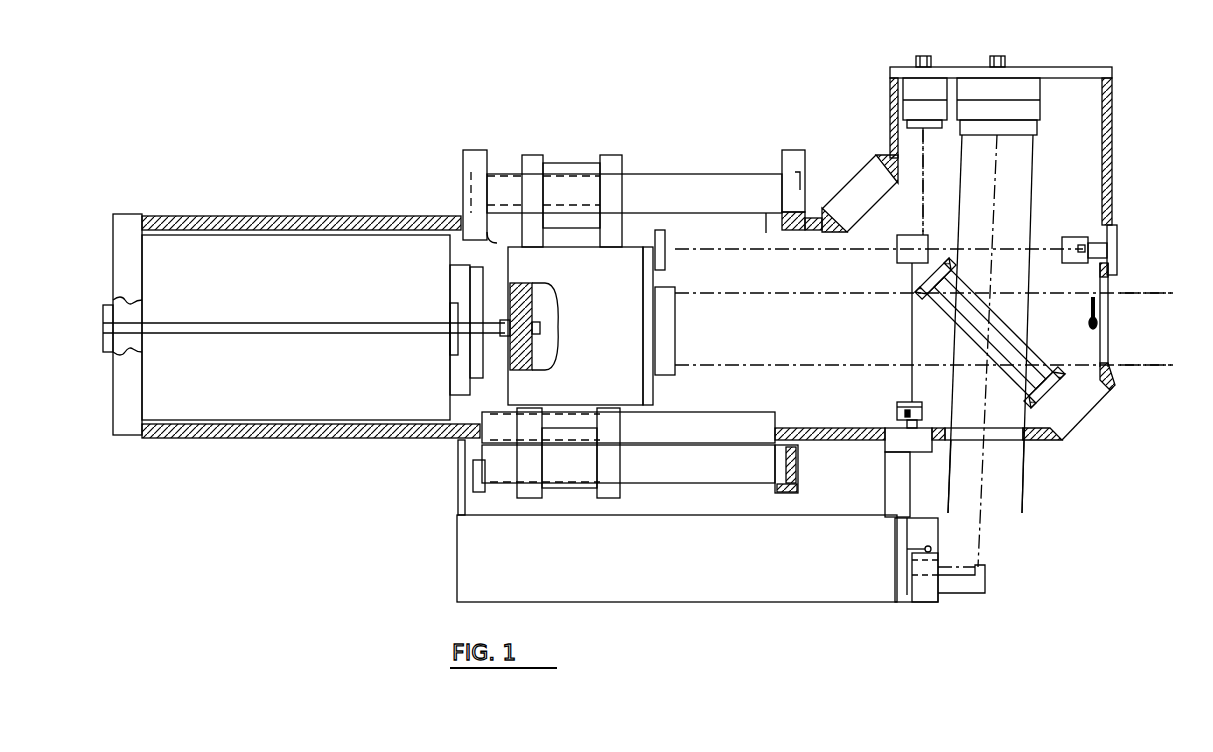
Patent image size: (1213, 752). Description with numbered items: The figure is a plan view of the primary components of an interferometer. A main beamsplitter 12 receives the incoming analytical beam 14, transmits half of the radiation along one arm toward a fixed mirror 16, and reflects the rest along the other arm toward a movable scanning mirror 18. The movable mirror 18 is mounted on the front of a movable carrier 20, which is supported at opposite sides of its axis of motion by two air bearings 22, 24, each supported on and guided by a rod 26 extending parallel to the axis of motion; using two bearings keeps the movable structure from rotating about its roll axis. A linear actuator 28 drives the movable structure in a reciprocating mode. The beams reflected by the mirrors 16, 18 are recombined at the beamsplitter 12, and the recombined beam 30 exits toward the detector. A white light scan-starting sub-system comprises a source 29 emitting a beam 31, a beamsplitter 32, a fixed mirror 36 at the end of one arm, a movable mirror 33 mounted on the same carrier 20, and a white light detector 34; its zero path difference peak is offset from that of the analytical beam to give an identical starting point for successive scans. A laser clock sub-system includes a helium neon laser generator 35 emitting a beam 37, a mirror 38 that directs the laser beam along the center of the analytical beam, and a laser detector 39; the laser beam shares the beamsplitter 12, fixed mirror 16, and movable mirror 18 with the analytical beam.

The main beamsplitter 12 is at (1010, 337).
The analytical beam 14 is at (953, 480).
The fixed mirror 16 is at (1040, 130).
The movable scanning mirror 18 is at (680, 330).
The movable carrier 20 is at (632, 262).
The air bearing 22 is at (563, 165).
The air bearing 24 is at (624, 463).
The rod 26 is at (733, 187).
The linear actuator 28 is at (382, 392).
The white light source 29 is at (905, 413).
The recombined beam 30 is at (1152, 293).
The white light beam 31 is at (920, 145).
The white light beamsplitter 32 is at (912, 235).
The movable mirror 33 is at (667, 265).
The white light detector 34 is at (1081, 245).
The helium neon laser generator 35 is at (838, 578).
The fixed mirror 36 is at (928, 130).
The laser beam 37 is at (980, 513).
The mirror 38 is at (985, 565).
The laser detector 39 is at (1097, 322).